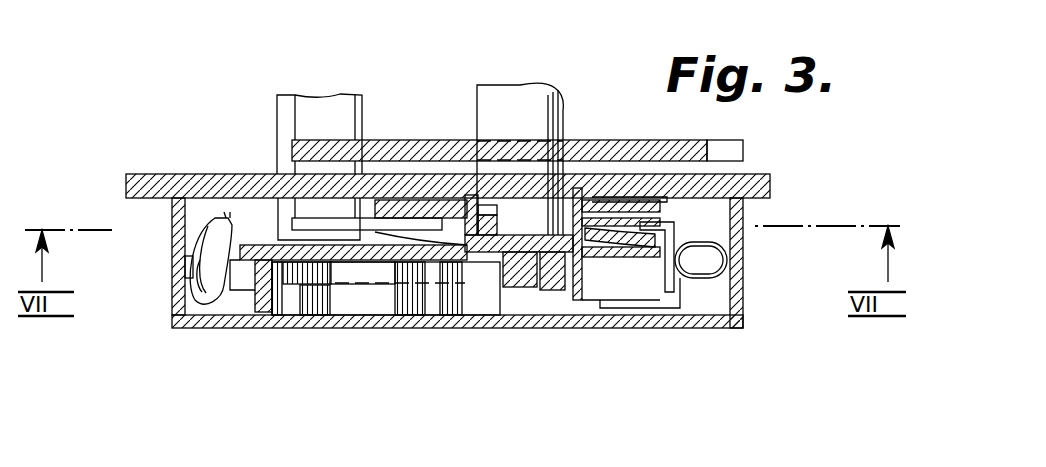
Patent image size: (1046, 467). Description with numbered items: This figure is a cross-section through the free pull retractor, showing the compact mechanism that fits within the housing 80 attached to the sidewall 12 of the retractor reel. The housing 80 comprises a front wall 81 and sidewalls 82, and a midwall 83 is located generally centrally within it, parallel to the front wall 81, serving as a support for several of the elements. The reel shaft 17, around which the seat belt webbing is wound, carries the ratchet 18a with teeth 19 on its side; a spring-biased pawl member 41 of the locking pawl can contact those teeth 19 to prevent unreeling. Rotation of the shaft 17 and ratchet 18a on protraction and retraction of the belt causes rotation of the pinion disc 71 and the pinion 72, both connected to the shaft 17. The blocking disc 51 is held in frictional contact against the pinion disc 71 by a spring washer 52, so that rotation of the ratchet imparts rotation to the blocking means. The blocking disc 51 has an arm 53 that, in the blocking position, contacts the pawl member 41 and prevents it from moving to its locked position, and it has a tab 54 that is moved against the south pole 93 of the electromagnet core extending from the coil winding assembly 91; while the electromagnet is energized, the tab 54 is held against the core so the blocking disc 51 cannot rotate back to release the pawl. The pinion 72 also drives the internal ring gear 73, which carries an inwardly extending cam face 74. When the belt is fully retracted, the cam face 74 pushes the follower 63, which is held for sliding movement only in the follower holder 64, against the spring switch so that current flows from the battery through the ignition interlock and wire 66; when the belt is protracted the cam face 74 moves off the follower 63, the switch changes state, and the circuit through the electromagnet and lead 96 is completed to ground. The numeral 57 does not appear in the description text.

The sidewall 12 is at (742, 180).
The shaft 17 is at (552, 112).
The ratchet 18a is at (380, 140).
The teeth 19 is at (731, 143).
The pawl member 41 is at (282, 113).
The blocking disc 51 is at (648, 228).
The spring washer 52 is at (438, 232).
The arm 53 is at (323, 212).
The tab 54 is at (668, 272).
The member 57 is at (112, 3).
The follower 63 is at (430, 300).
The follower holder 64 is at (363, 300).
The wire 66 is at (196, 275).
The pinion disc 71 is at (610, 246).
The pinion 72 is at (525, 275).
The internal ring gear 73 is at (468, 275).
The cam face 74 is at (331, 312).
The housing 80 is at (192, 330).
The front wall 81 is at (720, 322).
The sidewalls 82 is at (178, 298).
The midwall 83 is at (246, 245).
The coil winding assembly 91 is at (620, 288).
The south pole 93 is at (700, 268).
The lead 96 is at (220, 290).